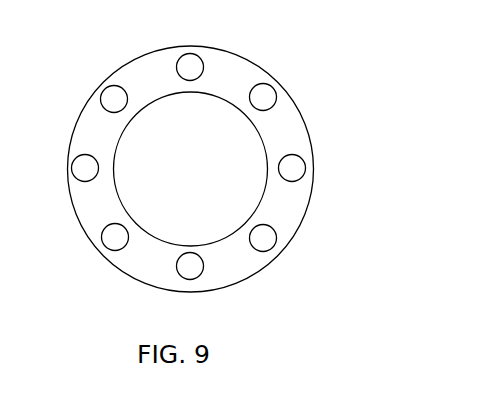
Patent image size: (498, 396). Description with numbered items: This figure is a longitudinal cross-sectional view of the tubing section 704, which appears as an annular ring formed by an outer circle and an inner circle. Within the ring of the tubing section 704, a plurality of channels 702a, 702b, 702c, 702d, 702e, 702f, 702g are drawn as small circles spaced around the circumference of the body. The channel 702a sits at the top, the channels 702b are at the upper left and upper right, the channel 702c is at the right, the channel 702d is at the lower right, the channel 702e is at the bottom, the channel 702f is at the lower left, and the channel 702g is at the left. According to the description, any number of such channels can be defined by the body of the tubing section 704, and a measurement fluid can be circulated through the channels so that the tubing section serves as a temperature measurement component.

The tubing section 704 is at (124, 63).
The channel 702a is at (195, 56).
The channel 702b is at (104, 92).
The channel 702c is at (302, 161).
The channel 702d is at (274, 247).
The channel 702e is at (197, 277).
The channel 702f is at (121, 249).
The channel 702g is at (76, 161).